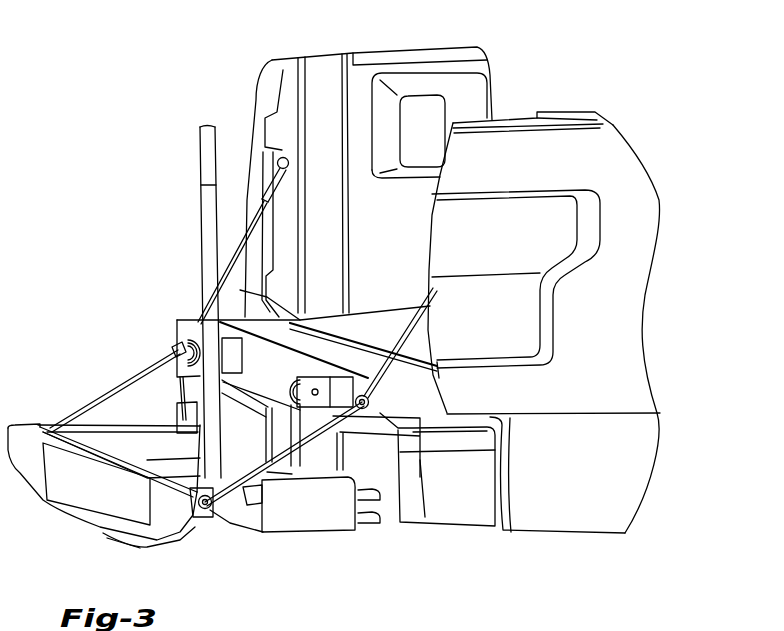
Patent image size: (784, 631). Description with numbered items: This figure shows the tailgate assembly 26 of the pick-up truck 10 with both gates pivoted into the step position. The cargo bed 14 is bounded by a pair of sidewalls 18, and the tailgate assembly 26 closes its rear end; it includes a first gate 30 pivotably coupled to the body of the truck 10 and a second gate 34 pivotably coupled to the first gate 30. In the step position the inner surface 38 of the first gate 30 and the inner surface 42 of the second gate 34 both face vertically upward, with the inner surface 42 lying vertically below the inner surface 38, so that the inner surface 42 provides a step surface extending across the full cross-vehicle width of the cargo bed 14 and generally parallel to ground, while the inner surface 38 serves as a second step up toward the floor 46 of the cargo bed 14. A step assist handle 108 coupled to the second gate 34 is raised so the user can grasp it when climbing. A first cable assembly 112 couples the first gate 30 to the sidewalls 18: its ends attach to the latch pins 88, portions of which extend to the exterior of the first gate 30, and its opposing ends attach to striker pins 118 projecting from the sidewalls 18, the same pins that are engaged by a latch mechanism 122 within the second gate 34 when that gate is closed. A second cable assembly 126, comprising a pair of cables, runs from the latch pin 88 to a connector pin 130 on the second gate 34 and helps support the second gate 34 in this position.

The pick-up truck 10 is at (633, 204).
The cargo bed 14 is at (438, 118).
The sidewalls 18 is at (316, 55).
The tailgate assembly 26 is at (66, 396).
The first gate 30 is at (393, 425).
The second gate 34 is at (290, 520).
The inner surface 38 is at (370, 362).
The inner surface 42 is at (145, 452).
The floor 46 is at (363, 327).
The latch pins 88 is at (370, 400).
The step assist handle 108 is at (207, 208).
The first cable assembly 112 is at (425, 330).
The striker pins 118 is at (284, 158).
The latch mechanism 122 is at (252, 504).
The second cable assembly 126 is at (322, 476).
The connector pin 130 is at (207, 508).